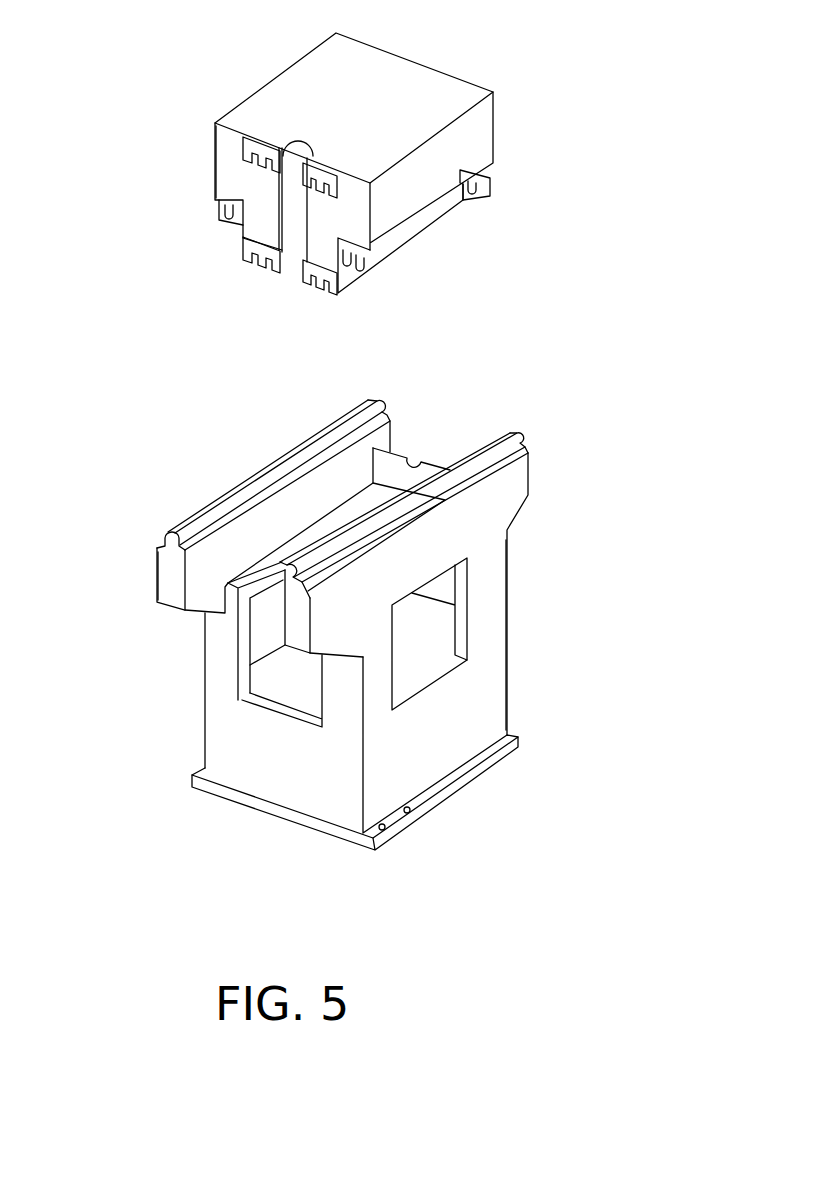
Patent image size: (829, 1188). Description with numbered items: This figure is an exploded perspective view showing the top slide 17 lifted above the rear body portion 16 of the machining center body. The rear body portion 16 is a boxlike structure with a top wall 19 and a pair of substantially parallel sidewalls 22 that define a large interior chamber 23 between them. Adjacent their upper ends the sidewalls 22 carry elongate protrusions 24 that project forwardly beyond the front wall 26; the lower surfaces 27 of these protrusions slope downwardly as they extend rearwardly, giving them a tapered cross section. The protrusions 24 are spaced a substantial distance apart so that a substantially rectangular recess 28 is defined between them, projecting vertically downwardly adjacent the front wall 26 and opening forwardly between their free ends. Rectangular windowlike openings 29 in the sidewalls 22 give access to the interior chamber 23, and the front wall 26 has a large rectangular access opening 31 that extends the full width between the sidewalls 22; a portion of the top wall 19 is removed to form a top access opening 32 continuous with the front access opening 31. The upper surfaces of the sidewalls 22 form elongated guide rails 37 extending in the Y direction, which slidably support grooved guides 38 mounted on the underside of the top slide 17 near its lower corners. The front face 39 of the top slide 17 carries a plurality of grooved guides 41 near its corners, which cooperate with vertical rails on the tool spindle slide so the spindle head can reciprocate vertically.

The rear body portion 16 is at (510, 561).
The top slide 17 is at (438, 62).
The top wall 19 is at (345, 522).
The sidewalls 22 is at (477, 700).
The interior chamber 23 is at (418, 637).
The protrusions 24 is at (158, 576).
The front wall 26 is at (312, 800).
The lower surfaces 27 is at (190, 620).
The recess 28 is at (213, 572).
The windowlike openings 29 is at (395, 683).
The access opening 31 is at (314, 700).
The top access opening 32 is at (268, 585).
The guide rails 37 is at (362, 398).
The grooved guides 38 is at (225, 205).
The front face 39 is at (232, 178).
The grooved guides 41 is at (252, 148).